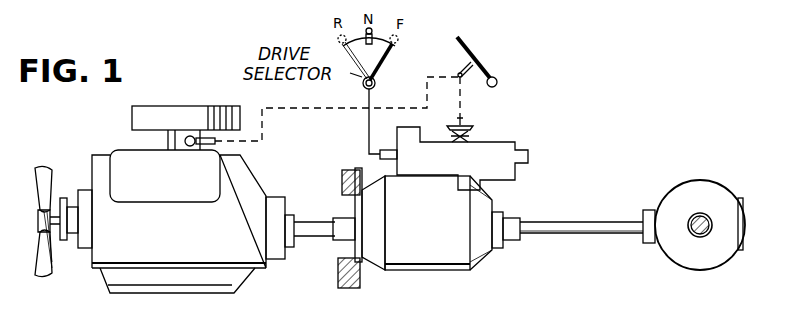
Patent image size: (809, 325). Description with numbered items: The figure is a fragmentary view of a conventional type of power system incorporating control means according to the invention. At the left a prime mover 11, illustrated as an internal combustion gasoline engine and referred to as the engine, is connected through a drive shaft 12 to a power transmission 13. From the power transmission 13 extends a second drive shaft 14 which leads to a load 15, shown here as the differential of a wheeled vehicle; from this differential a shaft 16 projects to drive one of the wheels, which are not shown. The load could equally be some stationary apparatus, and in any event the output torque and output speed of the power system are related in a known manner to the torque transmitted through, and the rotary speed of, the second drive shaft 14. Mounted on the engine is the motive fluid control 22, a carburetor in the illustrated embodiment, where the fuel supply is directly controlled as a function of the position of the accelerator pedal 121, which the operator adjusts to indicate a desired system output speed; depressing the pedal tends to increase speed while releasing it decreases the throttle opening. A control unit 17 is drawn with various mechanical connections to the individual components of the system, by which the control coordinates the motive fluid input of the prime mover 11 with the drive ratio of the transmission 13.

The prime mover 11 is at (186, 235).
The drive shaft 12 is at (308, 228).
The power transmission 13 is at (422, 237).
The second drive shaft 14 is at (543, 224).
The load 15 is at (700, 210).
The shaft 16 is at (714, 210).
The control unit 17 is at (480, 151).
The motive fluid control 22 is at (182, 113).
The accelerator pedal 121 is at (481, 58).